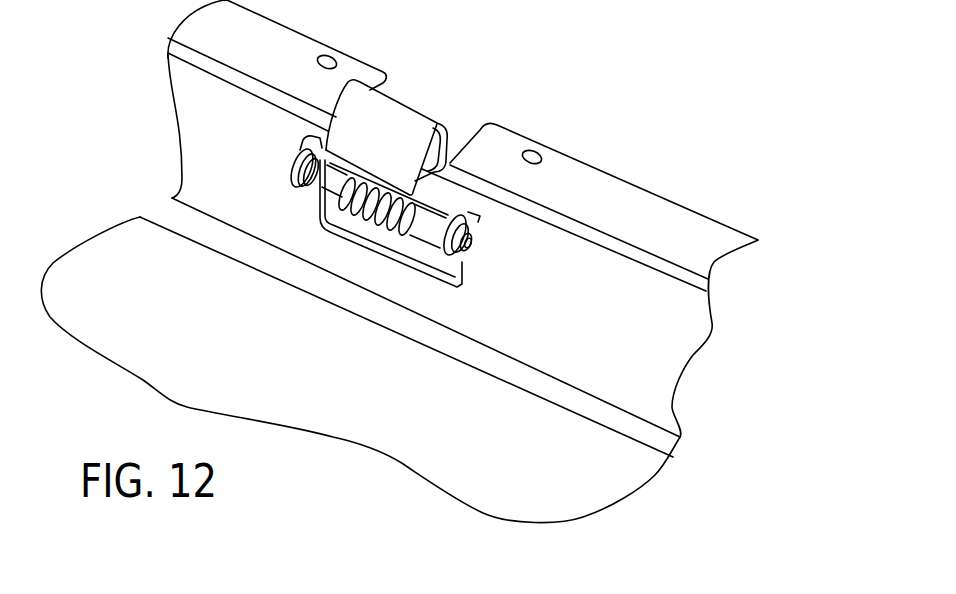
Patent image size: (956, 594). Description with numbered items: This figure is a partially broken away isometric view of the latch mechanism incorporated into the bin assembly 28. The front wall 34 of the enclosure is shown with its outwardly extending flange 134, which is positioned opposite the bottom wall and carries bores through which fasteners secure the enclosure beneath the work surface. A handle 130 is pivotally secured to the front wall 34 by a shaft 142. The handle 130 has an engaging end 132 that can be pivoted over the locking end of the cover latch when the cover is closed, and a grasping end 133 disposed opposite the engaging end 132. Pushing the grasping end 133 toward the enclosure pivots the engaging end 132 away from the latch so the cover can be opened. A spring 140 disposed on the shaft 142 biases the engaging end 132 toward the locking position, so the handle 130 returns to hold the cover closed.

The bin assembly 28 is at (427, 261).
The front wall 34 is at (673, 352).
The handle 130 is at (330, 206).
The engaging end 132 is at (342, 138).
The grasping end 133 is at (431, 203).
The flange 134 is at (349, 64).
The spring 140 is at (364, 213).
The shaft 142 is at (323, 180).